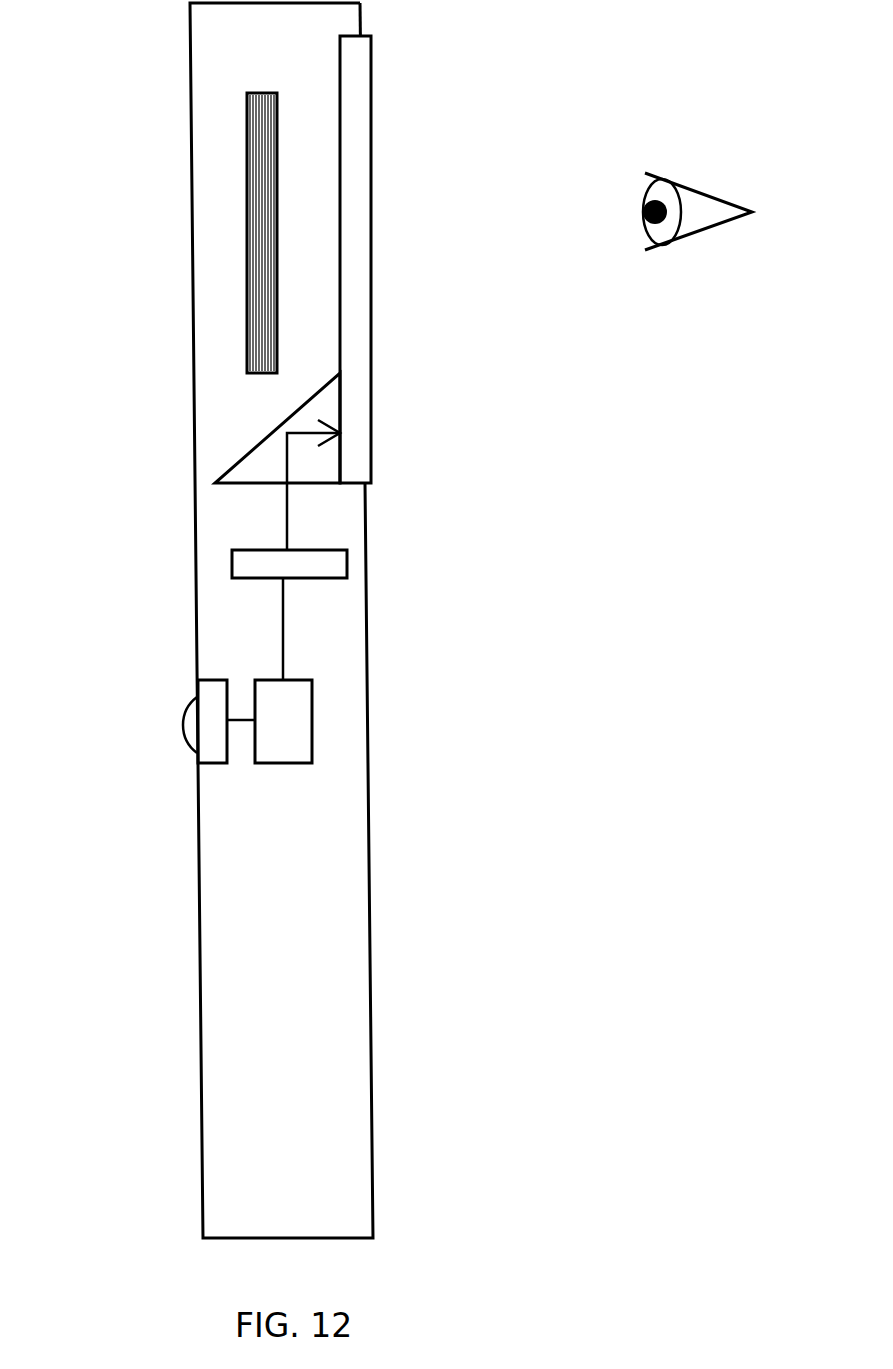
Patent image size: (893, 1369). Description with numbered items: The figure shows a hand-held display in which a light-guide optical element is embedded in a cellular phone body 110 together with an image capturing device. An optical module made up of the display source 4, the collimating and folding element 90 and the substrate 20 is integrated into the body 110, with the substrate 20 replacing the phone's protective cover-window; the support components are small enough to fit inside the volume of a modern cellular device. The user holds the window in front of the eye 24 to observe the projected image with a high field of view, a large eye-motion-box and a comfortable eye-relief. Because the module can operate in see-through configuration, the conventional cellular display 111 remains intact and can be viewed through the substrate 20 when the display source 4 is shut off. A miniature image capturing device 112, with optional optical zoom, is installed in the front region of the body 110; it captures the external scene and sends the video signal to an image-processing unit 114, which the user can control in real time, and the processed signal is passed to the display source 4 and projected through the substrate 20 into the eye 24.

The display source 4 is at (337, 542).
The substrate 20 is at (372, 298).
The eye 24 is at (700, 222).
The collimating and folding element 90 is at (277, 460).
The cellular phone body 110 is at (368, 735).
The conventional cellular display 111 is at (247, 262).
The image capturing device 112 is at (187, 720).
The image-processing unit 114 is at (312, 710).